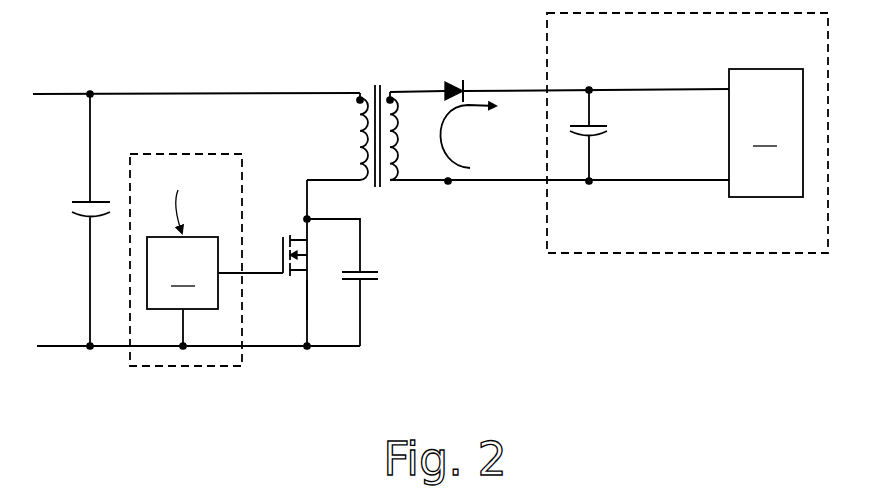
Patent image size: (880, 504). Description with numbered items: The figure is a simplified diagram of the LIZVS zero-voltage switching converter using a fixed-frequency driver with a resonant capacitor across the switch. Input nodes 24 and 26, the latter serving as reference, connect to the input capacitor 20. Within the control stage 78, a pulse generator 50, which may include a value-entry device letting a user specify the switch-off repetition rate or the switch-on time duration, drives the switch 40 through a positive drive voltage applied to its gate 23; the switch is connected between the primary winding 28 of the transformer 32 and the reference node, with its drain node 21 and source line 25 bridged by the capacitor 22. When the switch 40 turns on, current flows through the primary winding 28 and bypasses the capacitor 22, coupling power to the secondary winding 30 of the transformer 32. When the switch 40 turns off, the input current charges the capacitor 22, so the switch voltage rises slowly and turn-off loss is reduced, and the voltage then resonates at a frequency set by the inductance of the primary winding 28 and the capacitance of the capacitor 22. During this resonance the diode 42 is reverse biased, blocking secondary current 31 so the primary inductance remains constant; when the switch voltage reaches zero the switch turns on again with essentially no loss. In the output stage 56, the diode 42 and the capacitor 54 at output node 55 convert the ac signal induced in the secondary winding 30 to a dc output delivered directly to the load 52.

The input capacitor 20 is at (72, 208).
The drain node 21 is at (308, 218).
The capacitor 22 is at (383, 275).
The gate 23 is at (263, 276).
The input node 24 is at (90, 92).
The source line 25 is at (310, 298).
The input node 26 is at (90, 346).
The primary winding 28 is at (357, 153).
The secondary winding 30 is at (397, 153).
The transformer secondary winding 31 is at (468, 136).
The transformer 32 is at (375, 85).
The switch 40 is at (288, 228).
The diode 42 is at (453, 84).
The pulse generator 50 is at (182, 253).
The load 52 is at (766, 133).
The capacitor 54 is at (610, 133).
The output node 55 is at (589, 88).
The output stage 56 is at (636, 255).
The control stage 78 is at (243, 360).